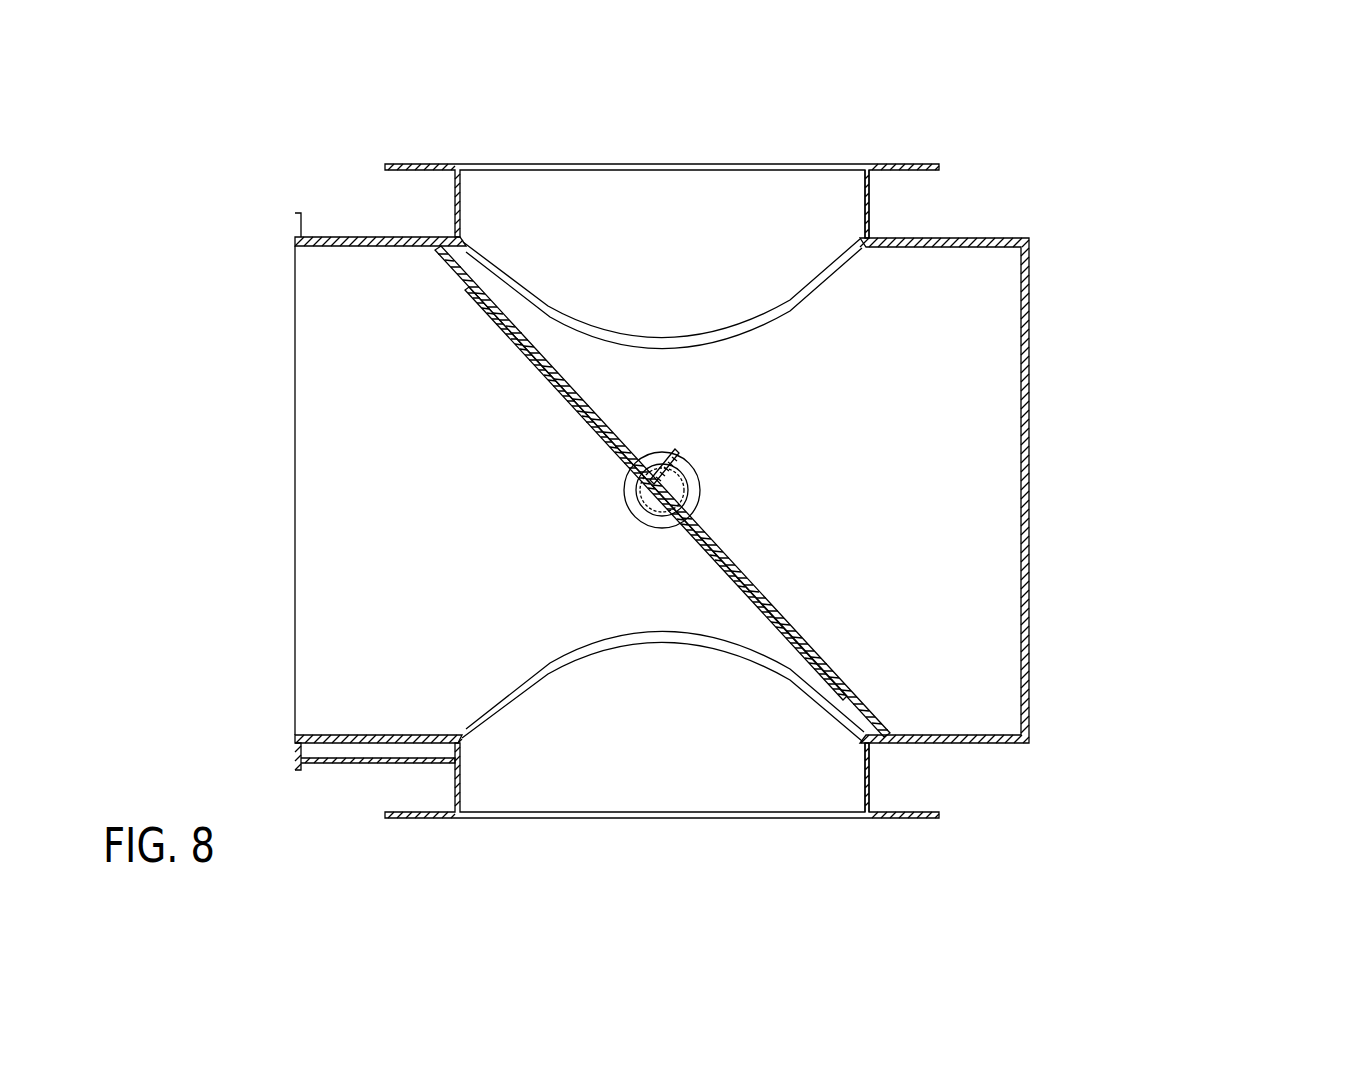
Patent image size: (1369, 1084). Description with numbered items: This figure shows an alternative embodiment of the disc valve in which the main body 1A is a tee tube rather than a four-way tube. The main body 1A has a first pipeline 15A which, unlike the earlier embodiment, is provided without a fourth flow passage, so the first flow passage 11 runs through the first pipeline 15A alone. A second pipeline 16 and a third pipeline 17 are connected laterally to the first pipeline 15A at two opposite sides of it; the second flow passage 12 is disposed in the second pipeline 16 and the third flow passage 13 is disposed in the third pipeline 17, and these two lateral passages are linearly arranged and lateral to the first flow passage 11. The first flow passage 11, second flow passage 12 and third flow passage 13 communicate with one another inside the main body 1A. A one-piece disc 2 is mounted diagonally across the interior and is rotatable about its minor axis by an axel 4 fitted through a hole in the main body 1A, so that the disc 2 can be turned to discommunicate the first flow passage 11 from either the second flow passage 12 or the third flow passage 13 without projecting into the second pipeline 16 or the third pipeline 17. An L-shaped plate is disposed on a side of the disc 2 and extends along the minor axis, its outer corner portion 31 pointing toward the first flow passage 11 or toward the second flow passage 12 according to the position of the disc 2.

The main body 1A is at (1118, 273).
The first flow passage 11 is at (327, 457).
The first pipeline 15A is at (825, 538).
The third flow passage 13 is at (648, 188).
The second flow passage 12 is at (648, 787).
The third pipeline 17 is at (869, 202).
The second pipeline 16 is at (869, 782).
The disc 2 is at (775, 628).
The axel 4 is at (641, 527).
The outer corner portion 31 is at (630, 475).